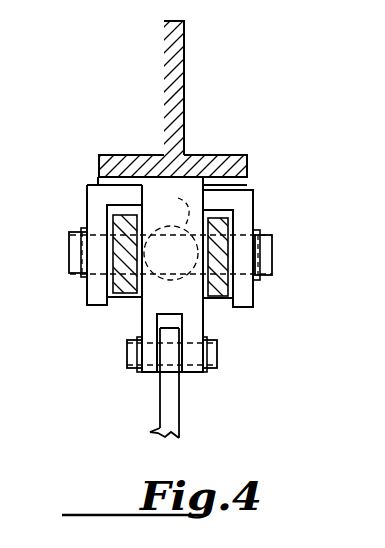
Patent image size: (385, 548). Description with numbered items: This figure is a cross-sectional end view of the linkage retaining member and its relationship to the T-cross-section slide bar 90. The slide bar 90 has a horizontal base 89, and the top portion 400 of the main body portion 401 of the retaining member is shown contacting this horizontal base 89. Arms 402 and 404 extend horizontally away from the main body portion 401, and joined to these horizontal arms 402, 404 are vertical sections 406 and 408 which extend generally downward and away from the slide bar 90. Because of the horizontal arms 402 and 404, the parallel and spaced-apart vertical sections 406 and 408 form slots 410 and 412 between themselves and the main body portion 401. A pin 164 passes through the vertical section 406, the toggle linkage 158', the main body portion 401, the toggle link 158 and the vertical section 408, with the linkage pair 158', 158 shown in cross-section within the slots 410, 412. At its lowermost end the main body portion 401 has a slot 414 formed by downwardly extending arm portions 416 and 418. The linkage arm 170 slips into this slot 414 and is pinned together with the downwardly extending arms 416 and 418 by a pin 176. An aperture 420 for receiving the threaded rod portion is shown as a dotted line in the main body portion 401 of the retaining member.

The T-cross-section slide bar 90 is at (172, 73).
The horizontal base 89 is at (218, 167).
The top portion 400 is at (247, 181).
The arm 402 is at (120, 198).
The arm 404 is at (243, 197).
The main body portion 401 is at (160, 302).
The slot 410 is at (113, 308).
The slot 412 is at (222, 304).
The toggle linkage 158' is at (117, 242).
The toggle link 158 is at (241, 251).
The aperture 420 is at (171, 232).
The pin 164 is at (268, 258).
The vertical section 406 is at (95, 290).
The vertical section 408 is at (243, 298).
The downwardly extending arm portion 416 is at (190, 377).
The slot 414 is at (172, 323).
The linkage arm 170 is at (175, 418).
The downwardly extending arm portion 418 is at (148, 373).
The pin 176 is at (217, 357).